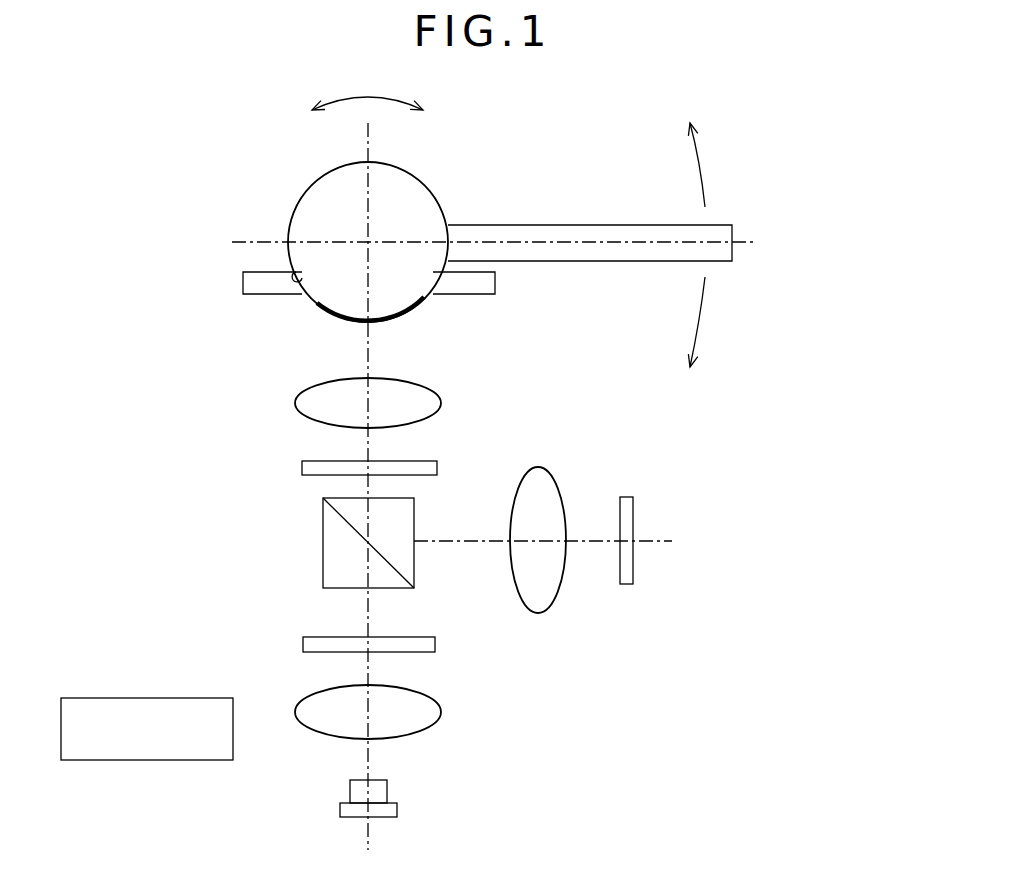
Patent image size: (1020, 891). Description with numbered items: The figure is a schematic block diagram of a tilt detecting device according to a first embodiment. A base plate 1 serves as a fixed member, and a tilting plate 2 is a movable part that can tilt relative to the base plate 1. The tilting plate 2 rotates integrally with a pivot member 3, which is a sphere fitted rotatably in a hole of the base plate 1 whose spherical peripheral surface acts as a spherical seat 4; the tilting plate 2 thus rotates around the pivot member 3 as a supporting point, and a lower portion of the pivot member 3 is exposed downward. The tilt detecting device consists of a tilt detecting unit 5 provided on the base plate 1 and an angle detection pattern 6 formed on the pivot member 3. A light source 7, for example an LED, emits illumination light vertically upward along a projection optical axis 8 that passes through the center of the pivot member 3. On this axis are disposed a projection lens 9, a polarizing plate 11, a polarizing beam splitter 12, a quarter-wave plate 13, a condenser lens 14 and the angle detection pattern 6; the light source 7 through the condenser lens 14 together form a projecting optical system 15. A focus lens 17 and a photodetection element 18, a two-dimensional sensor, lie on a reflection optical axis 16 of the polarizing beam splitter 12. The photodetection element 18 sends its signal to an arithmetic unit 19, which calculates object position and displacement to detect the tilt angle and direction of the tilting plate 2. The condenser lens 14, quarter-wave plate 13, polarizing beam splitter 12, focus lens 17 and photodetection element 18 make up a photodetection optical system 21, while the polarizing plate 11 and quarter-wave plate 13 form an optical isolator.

The base plate 1 is at (483, 294).
The tilting plate 2 is at (618, 225).
The pivot member 3 is at (305, 192).
The spherical seat 4 is at (298, 270).
The tilt detecting unit 5 is at (567, 705).
The angle detection pattern 6 is at (336, 310).
The light source 7 is at (390, 790).
The projection optical axis 8 is at (365, 670).
The projection lens 9 is at (441, 712).
The polarizing plate 11 is at (318, 637).
The polarizing beam splitter 12 is at (323, 549).
The quarter-wave plate 13 is at (302, 462).
The condenser lens 14 is at (441, 394).
The projecting optical system 15 is at (225, 585).
The reflection optical axis 16 is at (447, 545).
The focus lens 17 is at (552, 600).
The photodetection element 18 is at (633, 563).
The arithmetic unit 19 is at (150, 760).
The photodetection optical system 21 is at (535, 433).